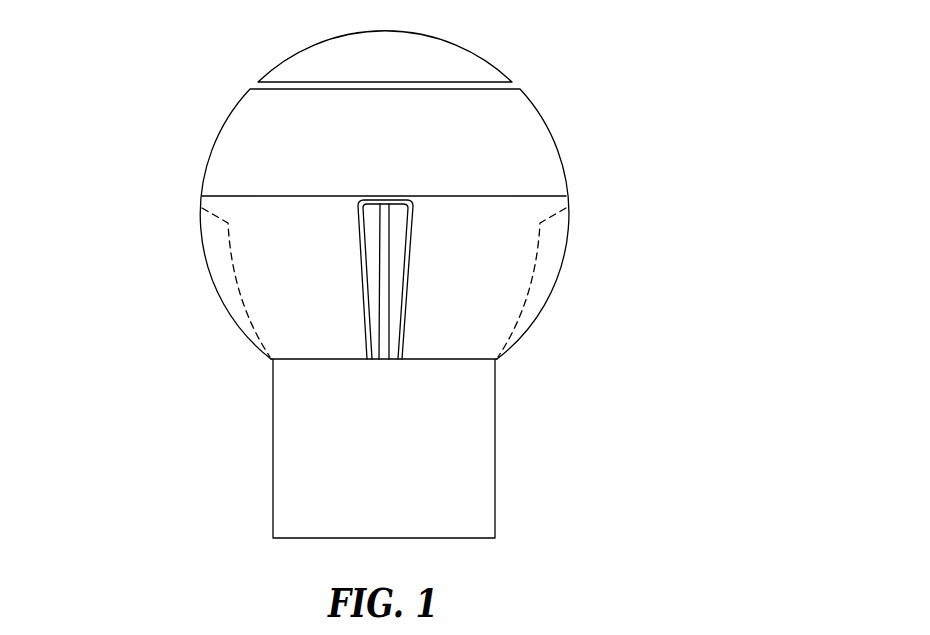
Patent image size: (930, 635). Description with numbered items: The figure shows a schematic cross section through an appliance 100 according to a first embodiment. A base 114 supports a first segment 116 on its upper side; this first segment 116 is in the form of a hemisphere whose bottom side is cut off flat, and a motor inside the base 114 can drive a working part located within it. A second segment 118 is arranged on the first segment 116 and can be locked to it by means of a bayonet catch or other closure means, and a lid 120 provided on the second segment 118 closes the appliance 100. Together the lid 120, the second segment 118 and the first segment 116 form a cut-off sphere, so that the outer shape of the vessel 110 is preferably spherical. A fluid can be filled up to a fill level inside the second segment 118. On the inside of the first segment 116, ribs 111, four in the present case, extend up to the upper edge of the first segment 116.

The appliance 100 is at (646, 134).
The vessel 110 is at (157, 236).
The ribs 111 is at (408, 287).
The base 114 is at (496, 475).
The first segment 116 is at (567, 242).
The second segment 118 is at (537, 108).
The lid 120 is at (497, 61).